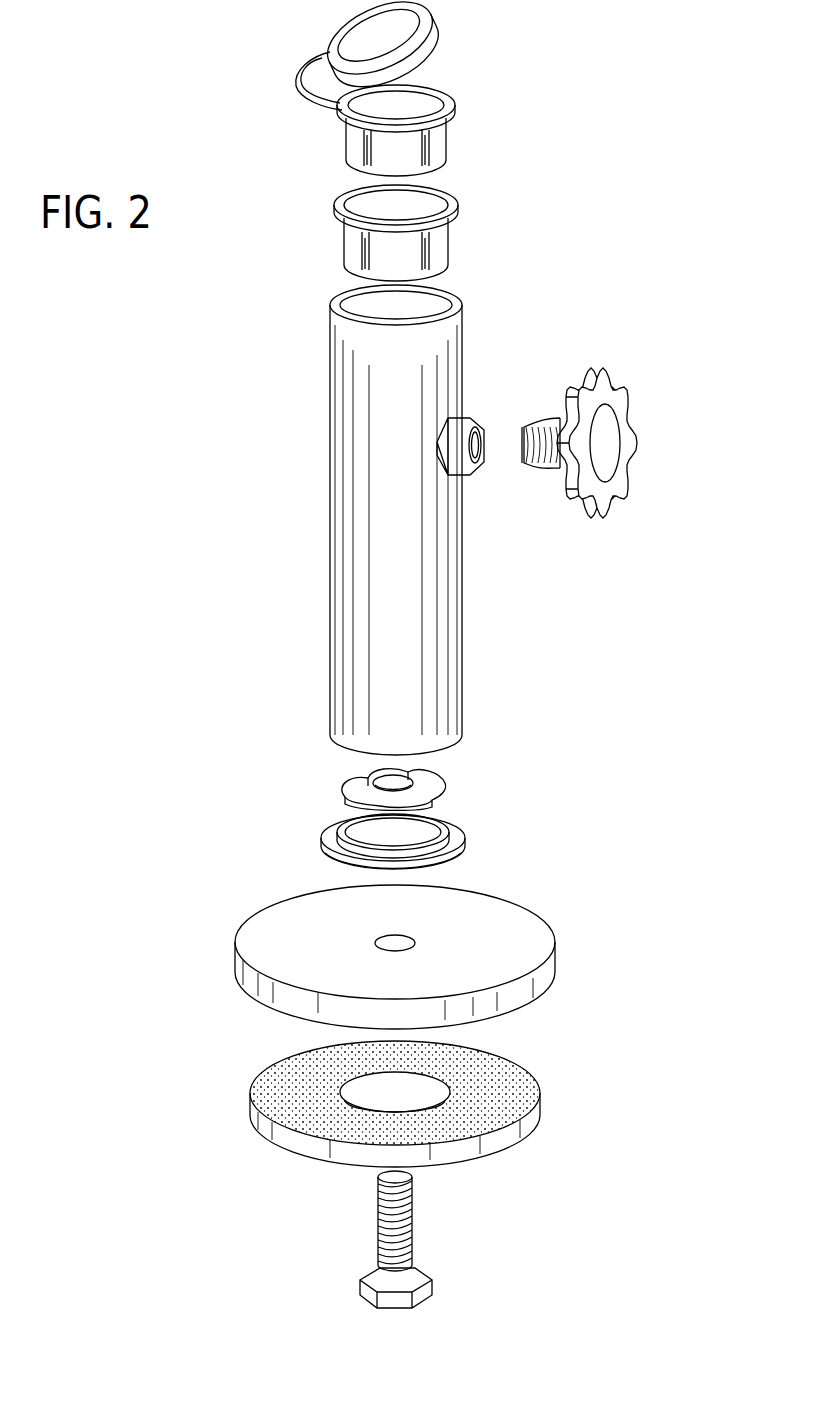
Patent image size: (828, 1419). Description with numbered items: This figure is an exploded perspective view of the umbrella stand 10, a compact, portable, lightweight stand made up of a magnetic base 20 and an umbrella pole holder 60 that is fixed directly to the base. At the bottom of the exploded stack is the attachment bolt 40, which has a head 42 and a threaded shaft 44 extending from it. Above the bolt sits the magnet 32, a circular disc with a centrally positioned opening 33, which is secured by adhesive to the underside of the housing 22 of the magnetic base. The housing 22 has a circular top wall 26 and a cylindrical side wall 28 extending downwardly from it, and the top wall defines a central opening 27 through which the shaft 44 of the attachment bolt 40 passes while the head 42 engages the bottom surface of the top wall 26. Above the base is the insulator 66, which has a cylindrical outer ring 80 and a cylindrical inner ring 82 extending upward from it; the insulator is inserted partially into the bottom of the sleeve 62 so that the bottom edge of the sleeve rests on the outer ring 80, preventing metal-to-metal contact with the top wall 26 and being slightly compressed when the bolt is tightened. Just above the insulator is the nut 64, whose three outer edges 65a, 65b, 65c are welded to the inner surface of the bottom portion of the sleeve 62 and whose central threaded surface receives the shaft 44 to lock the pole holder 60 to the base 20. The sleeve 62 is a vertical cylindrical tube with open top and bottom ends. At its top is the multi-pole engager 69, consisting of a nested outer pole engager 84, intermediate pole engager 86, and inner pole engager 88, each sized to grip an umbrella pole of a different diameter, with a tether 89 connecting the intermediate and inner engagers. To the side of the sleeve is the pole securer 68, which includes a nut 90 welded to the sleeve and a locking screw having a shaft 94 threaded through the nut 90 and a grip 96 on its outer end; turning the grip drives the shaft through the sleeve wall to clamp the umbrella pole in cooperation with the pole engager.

The umbrella stand 10 is at (675, 8).
The magnetic base 20 is at (208, 888).
The housing 22 is at (423, 940).
The top wall 26 is at (500, 912).
The opening 27 is at (395, 940).
The side wall 28 is at (540, 985).
The magnet 32 is at (437, 1104).
The centrally positioned opening 33 is at (440, 1090).
The attachment bolt 40 is at (409, 1239).
The head 42 is at (365, 1296).
The threaded shaft 44 is at (413, 1216).
The umbrella pole holder 60 is at (208, 8).
The sleeve 62 is at (325, 556).
The nut 64 is at (445, 787).
The outer edge 65a is at (347, 798).
The outer edge 65b is at (385, 777).
The outer edge 65c is at (455, 798).
The insulator 66 is at (406, 834).
The pole securer 68 is at (583, 503).
The multi-pole engager 69 is at (560, 3).
The outer ring 80 is at (325, 855).
The inner ring 82 is at (335, 828).
The outer pole engager 84 is at (462, 203).
The intermediate pole engager 86 is at (452, 135).
The inner pole engager 88 is at (430, 30).
The tether 89 is at (300, 82).
The nut 90 is at (468, 482).
The shaft 94 is at (542, 425).
The grip 96 is at (623, 425).